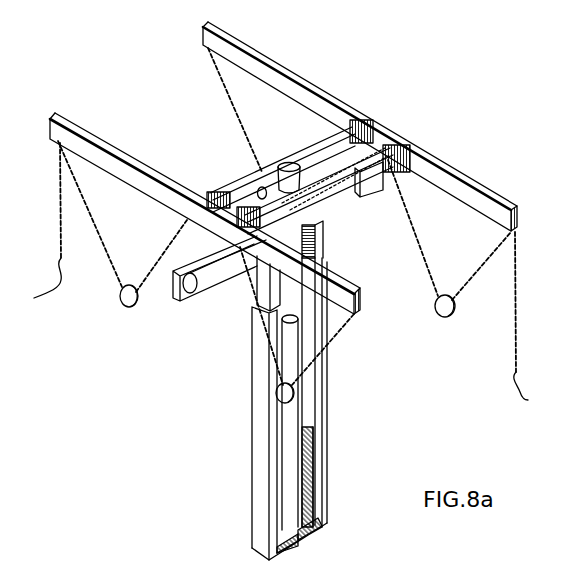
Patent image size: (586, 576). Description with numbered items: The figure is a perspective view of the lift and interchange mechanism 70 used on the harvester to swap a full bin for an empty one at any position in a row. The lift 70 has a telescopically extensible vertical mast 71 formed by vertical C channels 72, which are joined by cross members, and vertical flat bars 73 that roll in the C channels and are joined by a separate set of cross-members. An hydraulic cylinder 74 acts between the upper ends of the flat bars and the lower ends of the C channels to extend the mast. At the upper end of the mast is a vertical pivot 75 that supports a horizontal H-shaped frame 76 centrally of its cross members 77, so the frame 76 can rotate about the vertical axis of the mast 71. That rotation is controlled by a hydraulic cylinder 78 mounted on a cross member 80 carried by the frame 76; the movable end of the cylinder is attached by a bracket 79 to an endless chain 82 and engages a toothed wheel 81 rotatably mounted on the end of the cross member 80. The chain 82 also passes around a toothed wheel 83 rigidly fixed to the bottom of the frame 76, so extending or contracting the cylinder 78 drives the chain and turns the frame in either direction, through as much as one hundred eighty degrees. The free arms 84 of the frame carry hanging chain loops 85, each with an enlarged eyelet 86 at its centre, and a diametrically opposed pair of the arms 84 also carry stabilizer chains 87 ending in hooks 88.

The lift and interchange mechanism 70 is at (291, 283).
The telescopically extensible vertical mast 71 is at (323, 463).
The vertical C channel 72 is at (323, 418).
The vertical flat bar 73 is at (262, 285).
The hydraulic cylinder 74 is at (313, 518).
The vertical pivot 75 is at (292, 160).
The horizontal H-shaped frame 76 is at (295, 158).
The cross member 77 is at (222, 188).
The hydraulic cylinder 78 is at (168, 290).
The bracket 79 is at (417, 177).
The cross member 80 is at (176, 304).
The toothed wheel 81 is at (415, 168).
The endless chain 82 is at (358, 185).
The toothed wheel 83 is at (261, 188).
The free arm 84 is at (265, 53).
The chain loop 85 is at (212, 67).
The enlarged eyelet 86 is at (128, 308).
The stabilizer chain 87 is at (60, 230).
The hook 88 is at (536, 398).